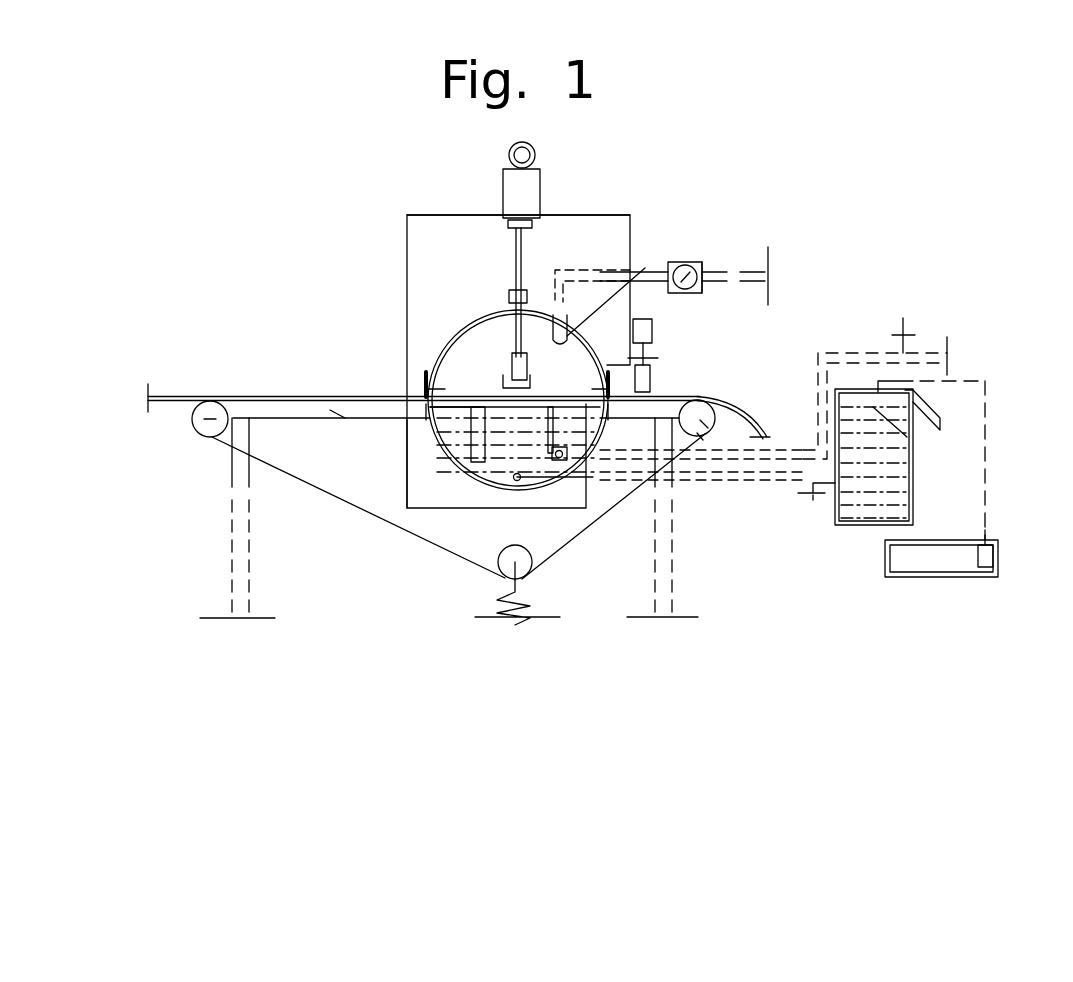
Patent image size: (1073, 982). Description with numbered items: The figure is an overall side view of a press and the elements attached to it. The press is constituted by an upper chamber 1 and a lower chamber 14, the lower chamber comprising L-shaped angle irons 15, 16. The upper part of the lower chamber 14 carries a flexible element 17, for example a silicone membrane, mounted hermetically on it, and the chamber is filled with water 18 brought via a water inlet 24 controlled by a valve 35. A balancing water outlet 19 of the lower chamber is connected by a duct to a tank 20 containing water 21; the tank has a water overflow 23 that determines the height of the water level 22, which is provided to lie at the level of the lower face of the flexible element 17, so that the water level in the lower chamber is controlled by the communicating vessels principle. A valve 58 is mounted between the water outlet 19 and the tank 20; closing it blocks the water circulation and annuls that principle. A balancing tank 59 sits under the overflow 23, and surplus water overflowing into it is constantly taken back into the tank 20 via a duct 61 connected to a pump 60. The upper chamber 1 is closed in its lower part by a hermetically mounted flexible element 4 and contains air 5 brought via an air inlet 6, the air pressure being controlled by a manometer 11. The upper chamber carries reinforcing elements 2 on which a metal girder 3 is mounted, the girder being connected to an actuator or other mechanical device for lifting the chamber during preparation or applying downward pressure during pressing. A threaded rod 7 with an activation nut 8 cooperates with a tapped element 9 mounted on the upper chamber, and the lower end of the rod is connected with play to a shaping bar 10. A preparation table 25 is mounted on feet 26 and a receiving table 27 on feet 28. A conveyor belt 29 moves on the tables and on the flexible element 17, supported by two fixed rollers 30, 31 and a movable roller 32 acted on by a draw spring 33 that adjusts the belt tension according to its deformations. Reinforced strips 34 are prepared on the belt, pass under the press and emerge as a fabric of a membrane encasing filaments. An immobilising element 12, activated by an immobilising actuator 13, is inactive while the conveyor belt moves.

The upper chamber 1 is at (470, 340).
The reinforcing elements 2 is at (458, 233).
The metal girder 3 is at (528, 193).
The flexible element 4 is at (383, 394).
The air 5 is at (473, 373).
The air inlet 6 is at (645, 263).
The threaded rod 7 is at (512, 268).
The activation nut 8 is at (490, 222).
The tapped element 9 is at (500, 306).
The shaping bar 10 is at (549, 317).
The manometer 11 is at (703, 260).
The immobilising element 12 is at (653, 380).
The immobilising actuator 13 is at (653, 337).
The lower chamber 14 is at (470, 462).
The L-shaped angle iron 15 is at (469, 410).
The L-shaped angle iron 16 is at (652, 410).
The flexible element 17 is at (407, 420).
The water 18 is at (548, 458).
The water outlet 19 is at (512, 480).
The tank 20 is at (913, 512).
The water 21 is at (893, 483).
The water level 22 is at (907, 437).
The water overflow 23 is at (940, 410).
The water inlet 24 is at (632, 408).
The preparation table 25 is at (337, 410).
The feet 26 is at (240, 573).
The receiving table 27 is at (697, 433).
The feet 28 is at (680, 592).
The conveyor belt 29 is at (247, 450).
The fixed roller 30 is at (197, 419).
The fixed roller 31 is at (710, 437).
The movable roller 32 is at (534, 566).
The draw spring 33 is at (518, 612).
The reinforced strips 34 is at (240, 395).
The valve 35 is at (905, 325).
The valve 58 is at (813, 498).
The balancing tank 59 is at (943, 578).
The pump 60 is at (993, 573).
The duct 61 is at (988, 446).